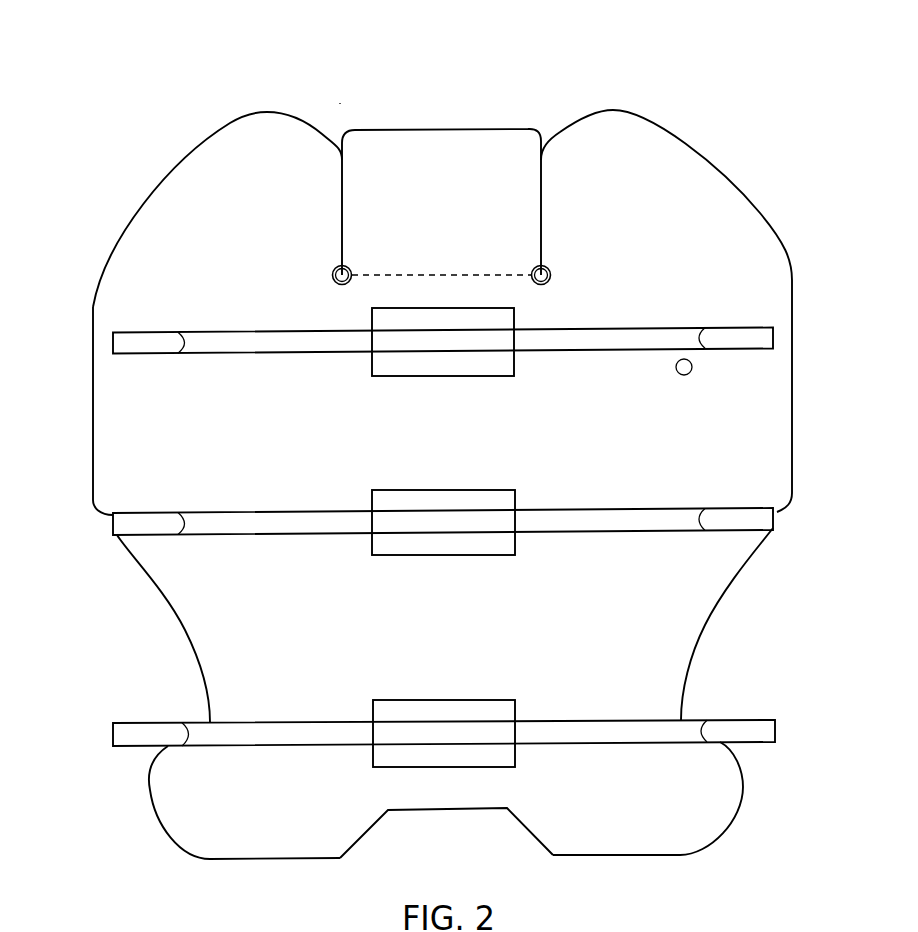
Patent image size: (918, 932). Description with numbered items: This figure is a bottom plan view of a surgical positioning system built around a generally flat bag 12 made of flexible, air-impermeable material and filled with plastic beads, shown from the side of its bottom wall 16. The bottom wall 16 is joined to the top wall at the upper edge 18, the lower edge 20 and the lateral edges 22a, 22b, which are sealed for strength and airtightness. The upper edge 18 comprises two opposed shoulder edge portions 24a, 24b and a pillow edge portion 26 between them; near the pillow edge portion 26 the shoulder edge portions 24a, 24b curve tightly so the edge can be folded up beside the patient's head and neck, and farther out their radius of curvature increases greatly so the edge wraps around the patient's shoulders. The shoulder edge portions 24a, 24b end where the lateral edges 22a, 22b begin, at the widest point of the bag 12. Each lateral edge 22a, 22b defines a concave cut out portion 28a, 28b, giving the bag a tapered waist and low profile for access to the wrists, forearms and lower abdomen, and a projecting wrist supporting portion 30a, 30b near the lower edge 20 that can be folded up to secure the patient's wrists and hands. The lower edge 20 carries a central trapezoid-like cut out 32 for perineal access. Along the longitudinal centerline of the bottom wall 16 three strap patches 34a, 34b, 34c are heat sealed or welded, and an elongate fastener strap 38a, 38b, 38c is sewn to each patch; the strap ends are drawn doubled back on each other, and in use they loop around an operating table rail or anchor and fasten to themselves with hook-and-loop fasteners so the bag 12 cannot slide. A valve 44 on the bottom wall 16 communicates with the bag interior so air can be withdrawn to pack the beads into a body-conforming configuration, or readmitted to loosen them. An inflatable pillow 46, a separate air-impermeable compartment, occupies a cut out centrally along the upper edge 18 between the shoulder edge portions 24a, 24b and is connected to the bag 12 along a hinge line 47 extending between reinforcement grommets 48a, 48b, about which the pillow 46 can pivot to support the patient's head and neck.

The bag 12 is at (151, 61).
The bottom wall 16 is at (453, 458).
The upper edge 18 is at (349, 119).
The lower edge 20 is at (620, 861).
The lateral edge 22a is at (88, 517).
The lateral edge 22b is at (799, 505).
The shoulder edge portion 24a is at (270, 112).
The shoulder edge portion 24b is at (613, 110).
The pillow edge portion 26 is at (440, 128).
The cut out portion 28a is at (177, 615).
The cut out portion 28b is at (713, 610).
The wrist supporting portion 30a is at (150, 790).
The wrist supporting portion 30b is at (745, 783).
The central trapezoid-like cut out 32 is at (441, 810).
The strap patch 34a is at (528, 381).
The strap patch 34b is at (528, 561).
The strap patch 34c is at (528, 769).
The fastener strap 38a is at (523, 333).
The fastener strap 38b is at (523, 513).
The fastener strap 38c is at (522, 727).
The valve 44 is at (683, 376).
The inflatable pillow 46 is at (451, 211).
The hinge line 47 is at (442, 273).
The reinforcement grommet 48a is at (332, 274).
The reinforcement grommet 48b is at (553, 273).